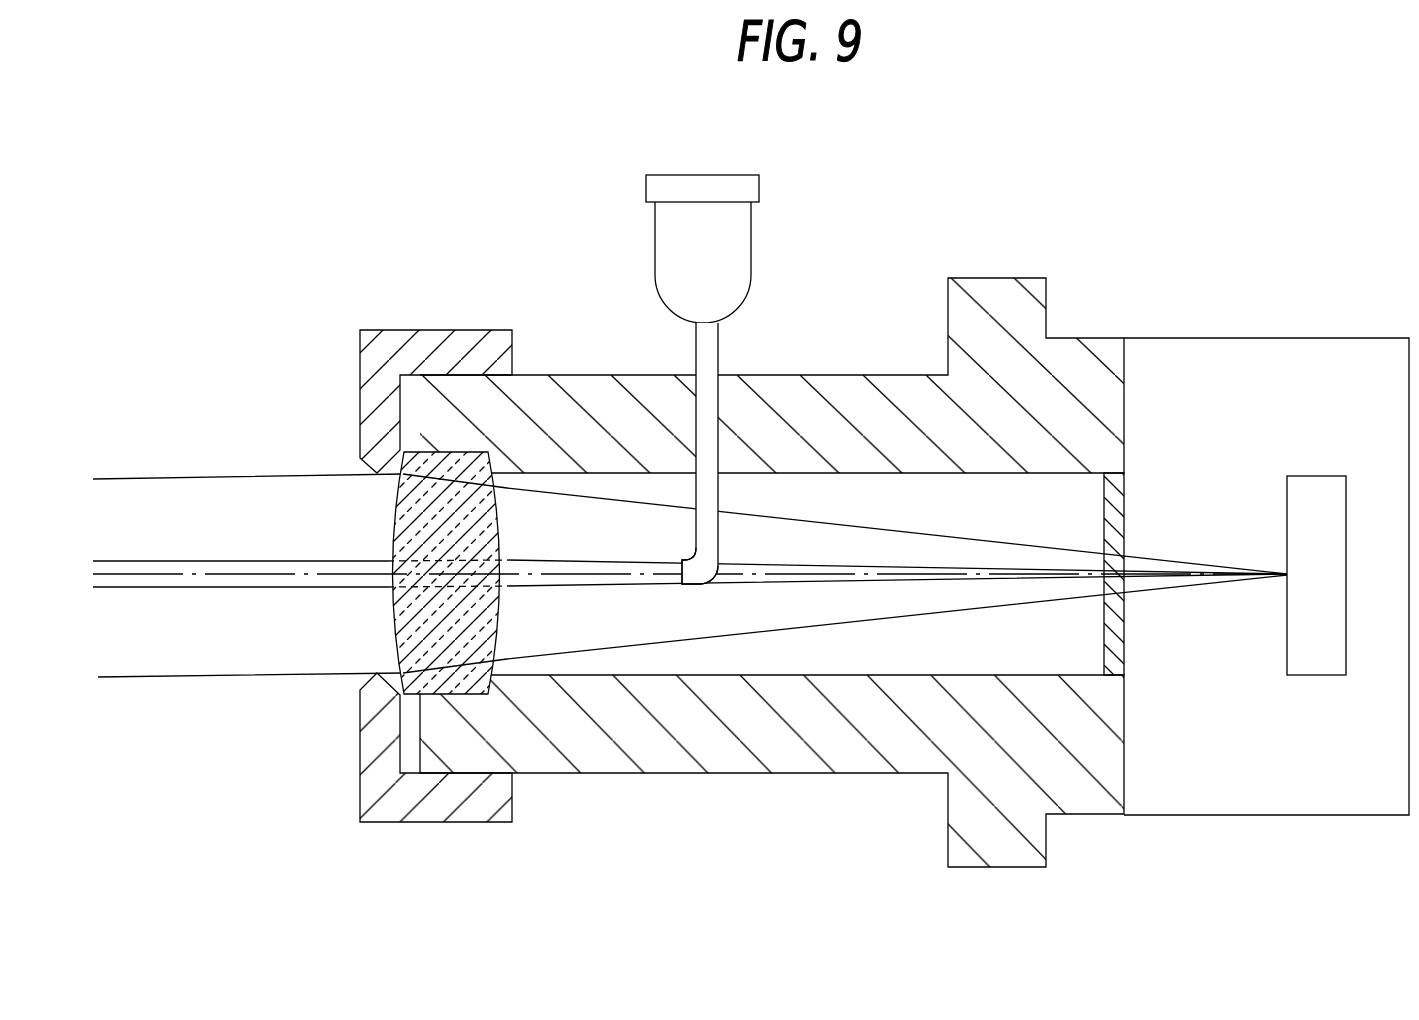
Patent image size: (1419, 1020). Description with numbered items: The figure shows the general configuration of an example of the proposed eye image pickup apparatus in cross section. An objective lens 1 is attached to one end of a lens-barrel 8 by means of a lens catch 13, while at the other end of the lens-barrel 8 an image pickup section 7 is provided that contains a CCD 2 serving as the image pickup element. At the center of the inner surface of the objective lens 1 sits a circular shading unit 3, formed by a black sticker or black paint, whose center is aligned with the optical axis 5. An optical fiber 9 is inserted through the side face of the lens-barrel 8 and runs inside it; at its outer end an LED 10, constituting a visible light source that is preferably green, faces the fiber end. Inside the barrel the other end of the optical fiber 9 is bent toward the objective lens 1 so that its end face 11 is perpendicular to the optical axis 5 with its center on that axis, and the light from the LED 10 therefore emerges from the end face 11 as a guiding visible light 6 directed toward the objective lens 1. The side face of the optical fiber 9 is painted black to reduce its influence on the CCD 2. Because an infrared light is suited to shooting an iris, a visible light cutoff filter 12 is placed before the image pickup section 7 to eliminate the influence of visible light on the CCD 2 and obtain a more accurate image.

The objective lens 1 is at (402, 624).
The CCD 2 is at (1313, 482).
The shading unit 3 is at (510, 578).
The optical axis 5 is at (249, 578).
The guiding visible light 6 is at (540, 560).
The image pickup section 7 is at (1207, 336).
The lens-barrel 8 is at (838, 383).
The optical fiber 9 is at (706, 425).
The LED 10 is at (722, 269).
The end face 11 is at (684, 581).
The visible light cutoff filter 12 is at (1128, 632).
The lens catch 13 is at (387, 345).